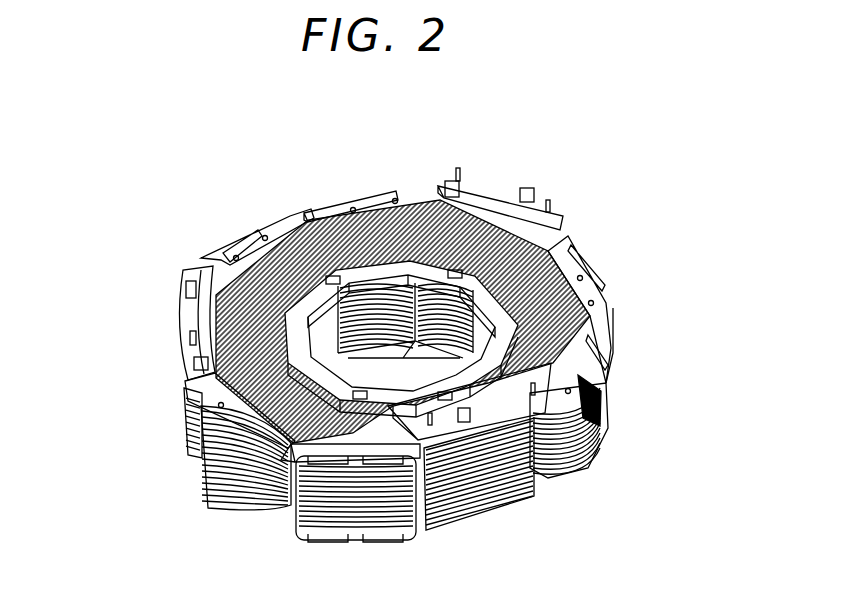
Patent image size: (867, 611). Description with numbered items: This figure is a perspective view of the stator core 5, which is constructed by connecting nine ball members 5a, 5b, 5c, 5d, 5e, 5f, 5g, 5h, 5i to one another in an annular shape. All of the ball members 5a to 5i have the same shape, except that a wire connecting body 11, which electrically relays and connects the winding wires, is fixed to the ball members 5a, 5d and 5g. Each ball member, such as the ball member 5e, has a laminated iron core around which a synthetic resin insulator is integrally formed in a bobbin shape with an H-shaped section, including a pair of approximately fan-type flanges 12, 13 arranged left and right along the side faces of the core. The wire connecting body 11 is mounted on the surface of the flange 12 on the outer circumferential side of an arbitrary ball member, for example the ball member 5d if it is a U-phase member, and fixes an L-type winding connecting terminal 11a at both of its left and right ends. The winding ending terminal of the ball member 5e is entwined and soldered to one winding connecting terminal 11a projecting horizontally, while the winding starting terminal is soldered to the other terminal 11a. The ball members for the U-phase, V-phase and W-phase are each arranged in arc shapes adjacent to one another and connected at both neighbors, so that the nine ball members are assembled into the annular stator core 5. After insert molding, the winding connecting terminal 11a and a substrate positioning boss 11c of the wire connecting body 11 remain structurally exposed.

The stator core 5 is at (238, 184).
The ball member 5a is at (560, 219).
The ball member 5b is at (597, 272).
The ball member 5c is at (612, 398).
The ball member 5d is at (504, 517).
The ball member 5e is at (326, 539).
The ball member 5f is at (223, 490).
The ball member 5g is at (166, 402).
The ball member 5h is at (213, 245).
The ball member 5i is at (331, 184).
The wire connecting body 11 is at (464, 177).
The winding connecting terminal 11a is at (436, 176).
The substrate positioning boss 11c is at (518, 180).
The flange 12 is at (430, 468).
The flange 13 is at (372, 534).